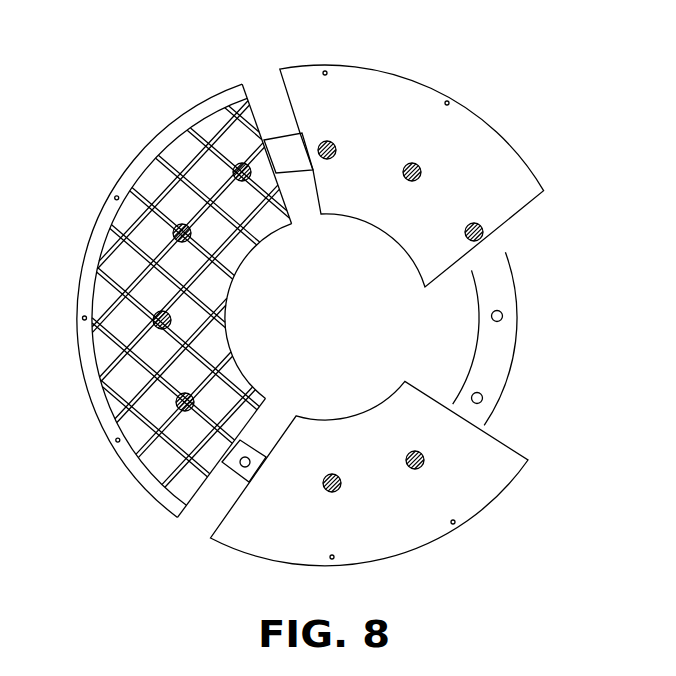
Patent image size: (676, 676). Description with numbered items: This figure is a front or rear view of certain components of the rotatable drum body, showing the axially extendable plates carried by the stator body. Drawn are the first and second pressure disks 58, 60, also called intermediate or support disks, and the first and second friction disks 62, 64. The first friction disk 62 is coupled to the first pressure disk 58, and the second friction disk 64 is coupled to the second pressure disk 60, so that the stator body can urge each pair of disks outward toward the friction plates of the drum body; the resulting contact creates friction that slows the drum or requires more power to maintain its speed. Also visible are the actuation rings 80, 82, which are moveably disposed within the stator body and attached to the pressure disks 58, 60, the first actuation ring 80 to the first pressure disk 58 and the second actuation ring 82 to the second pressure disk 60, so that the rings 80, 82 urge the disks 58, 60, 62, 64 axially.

The first pressure disk 58 is at (376, 492).
The second pressure disk 60 is at (395, 517).
The first friction disk 62 is at (170, 300).
The second friction disk 64 is at (142, 295).
The first actuation ring 80 is at (525, 338).
The second actuation ring 82 is at (493, 358).